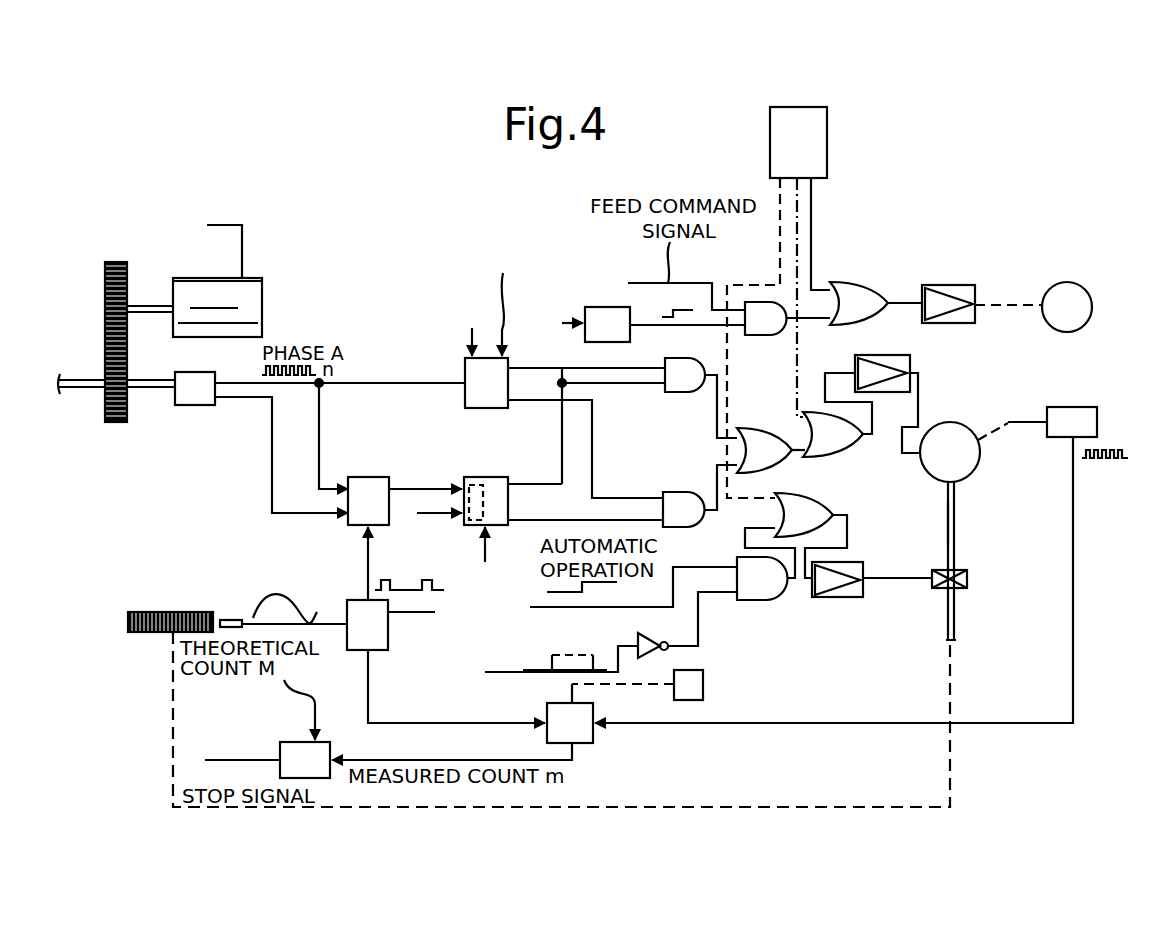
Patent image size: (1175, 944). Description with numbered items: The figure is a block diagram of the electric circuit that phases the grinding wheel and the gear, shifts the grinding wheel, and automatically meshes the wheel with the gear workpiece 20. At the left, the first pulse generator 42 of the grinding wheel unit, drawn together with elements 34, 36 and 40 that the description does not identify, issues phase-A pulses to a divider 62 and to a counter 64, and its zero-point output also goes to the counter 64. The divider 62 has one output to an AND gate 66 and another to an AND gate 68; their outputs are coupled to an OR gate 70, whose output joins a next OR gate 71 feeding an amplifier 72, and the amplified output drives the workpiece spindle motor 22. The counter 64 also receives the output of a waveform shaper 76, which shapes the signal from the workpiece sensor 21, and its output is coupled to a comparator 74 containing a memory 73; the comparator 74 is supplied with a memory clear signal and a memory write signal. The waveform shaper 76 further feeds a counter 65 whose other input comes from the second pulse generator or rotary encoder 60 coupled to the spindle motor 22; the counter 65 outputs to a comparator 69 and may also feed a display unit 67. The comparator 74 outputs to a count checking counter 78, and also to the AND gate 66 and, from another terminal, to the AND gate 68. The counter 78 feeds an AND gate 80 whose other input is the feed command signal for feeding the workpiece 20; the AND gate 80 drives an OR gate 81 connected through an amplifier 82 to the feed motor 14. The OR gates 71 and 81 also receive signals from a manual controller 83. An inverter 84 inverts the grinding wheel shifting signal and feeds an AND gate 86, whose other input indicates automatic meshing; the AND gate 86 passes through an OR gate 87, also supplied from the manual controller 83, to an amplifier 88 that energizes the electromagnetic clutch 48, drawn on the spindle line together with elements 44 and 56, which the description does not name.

The feed motor 14 is at (1065, 285).
The workpiece 20 is at (168, 612).
The workpiece sensor 21 is at (233, 620).
The workpiece spindle motor 22 is at (960, 430).
The motor 34 is at (257, 298).
The rotary disk 36 is at (104, 306).
The shaft 40 is at (104, 384).
The first pulse generator 42 is at (197, 407).
The feed shaft 44 is at (947, 628).
The electromagnetic clutch 48 is at (932, 590).
The shaft portion 56 is at (946, 522).
The second pulse generator 60 is at (1077, 408).
The divider 62 is at (465, 362).
The counter 64 is at (368, 480).
The counter 65 is at (585, 732).
The AND gate 66 is at (683, 393).
The display unit 67 is at (703, 686).
The AND gate 68 is at (686, 496).
The comparator 69 is at (297, 748).
The OR gate 70 is at (773, 440).
The OR gate 71 is at (828, 452).
The amplifier 72 is at (885, 356).
The memory 73 is at (469, 488).
The comparator 74 is at (540, 500).
The waveform shaper 76 is at (380, 630).
The counter 78 is at (600, 308).
The AND gate 80 is at (768, 328).
The OR gate 81 is at (852, 284).
The amplifier 82 is at (950, 285).
The manual controller 83 is at (812, 153).
The inverter 84 is at (650, 652).
The AND gate 86 is at (765, 590).
The OR gate 87 is at (803, 494).
The amplifier 88 is at (838, 598).